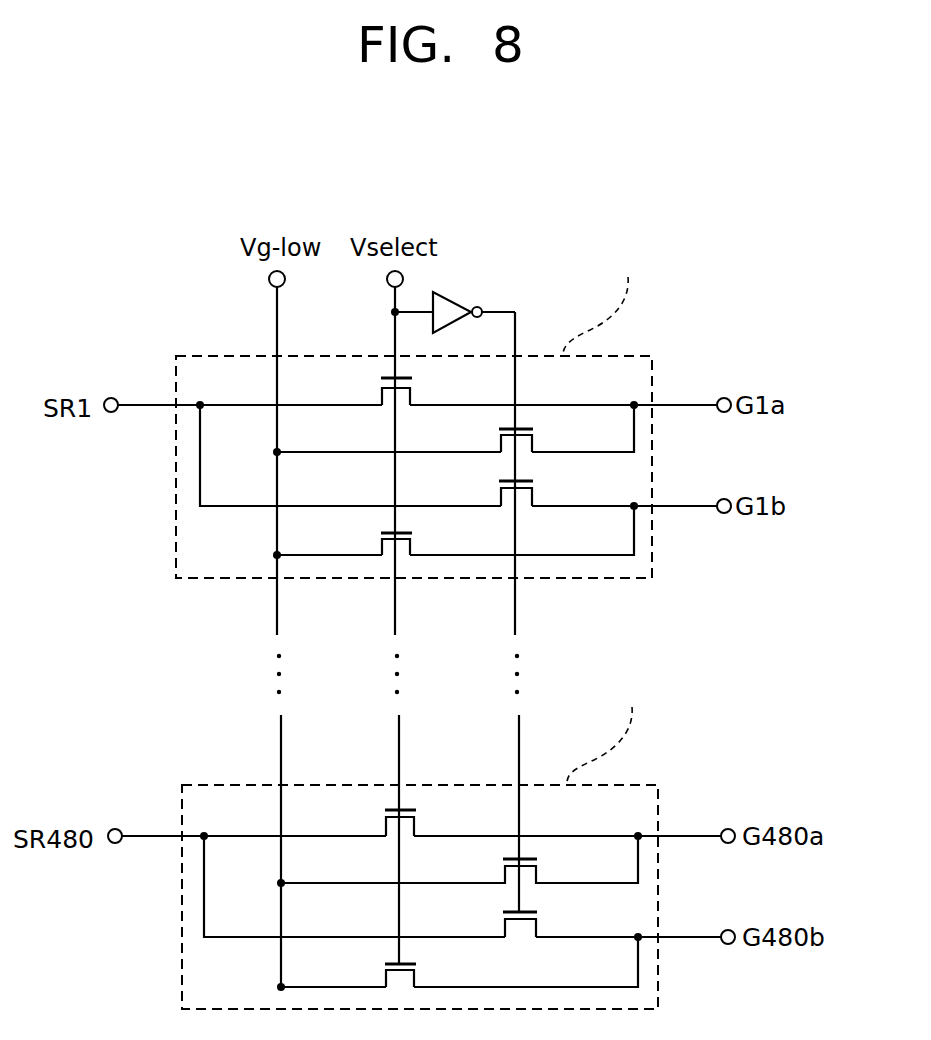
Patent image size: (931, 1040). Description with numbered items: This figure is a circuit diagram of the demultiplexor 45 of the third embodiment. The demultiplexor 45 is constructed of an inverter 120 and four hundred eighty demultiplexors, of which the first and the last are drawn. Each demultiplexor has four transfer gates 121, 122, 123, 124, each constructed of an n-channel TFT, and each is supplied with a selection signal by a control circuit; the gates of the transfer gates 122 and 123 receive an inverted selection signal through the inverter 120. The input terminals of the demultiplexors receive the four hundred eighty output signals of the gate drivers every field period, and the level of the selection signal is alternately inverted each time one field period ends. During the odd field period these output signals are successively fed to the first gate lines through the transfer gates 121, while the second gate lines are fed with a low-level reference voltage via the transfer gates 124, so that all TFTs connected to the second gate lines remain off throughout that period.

The demultiplexor 45 is at (763, 253).
The inverter 120 is at (456, 302).
The transfer gate 121 is at (413, 386).
The transfer gate 122 is at (534, 435).
The transfer gate 123 is at (534, 487).
The transfer gate 124 is at (418, 540).